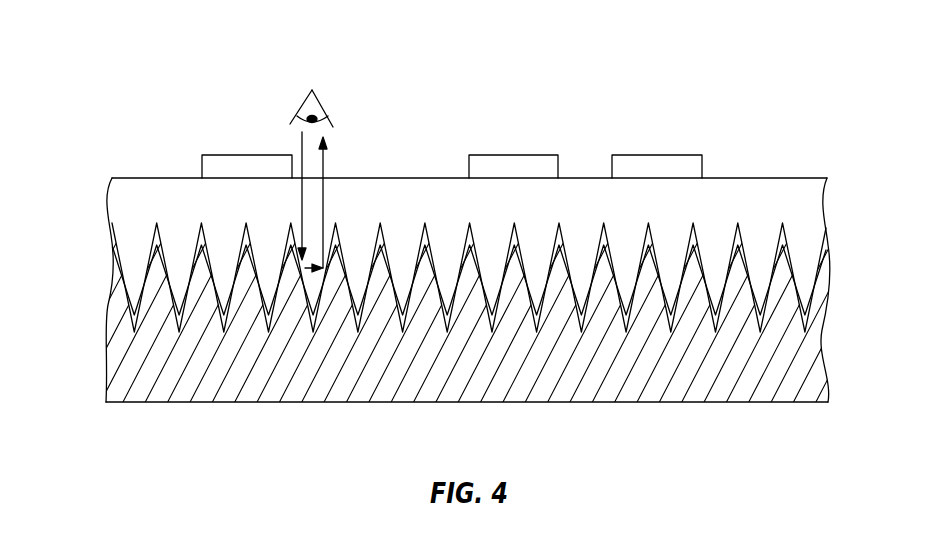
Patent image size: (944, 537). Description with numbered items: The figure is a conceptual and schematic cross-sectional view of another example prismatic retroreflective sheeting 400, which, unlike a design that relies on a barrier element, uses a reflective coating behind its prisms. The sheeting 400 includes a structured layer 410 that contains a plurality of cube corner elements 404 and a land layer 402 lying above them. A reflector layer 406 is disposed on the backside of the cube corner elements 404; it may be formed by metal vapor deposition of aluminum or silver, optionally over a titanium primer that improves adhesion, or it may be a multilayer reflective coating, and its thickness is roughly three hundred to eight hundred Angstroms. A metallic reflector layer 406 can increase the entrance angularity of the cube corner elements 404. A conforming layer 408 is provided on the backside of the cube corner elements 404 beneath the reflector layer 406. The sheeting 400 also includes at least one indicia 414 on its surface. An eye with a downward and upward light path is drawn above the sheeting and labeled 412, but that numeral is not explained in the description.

The prismatic retroreflective sheeting 400 is at (135, 113).
The land layer 402 is at (118, 197).
The cube corner elements 404 is at (128, 277).
The reflector layer 406 is at (810, 290).
The conforming layer 408 is at (122, 370).
The structured layer 410 is at (757, 230).
The viewer eye and light path 412 is at (302, 102).
The indicia 414 is at (512, 168).